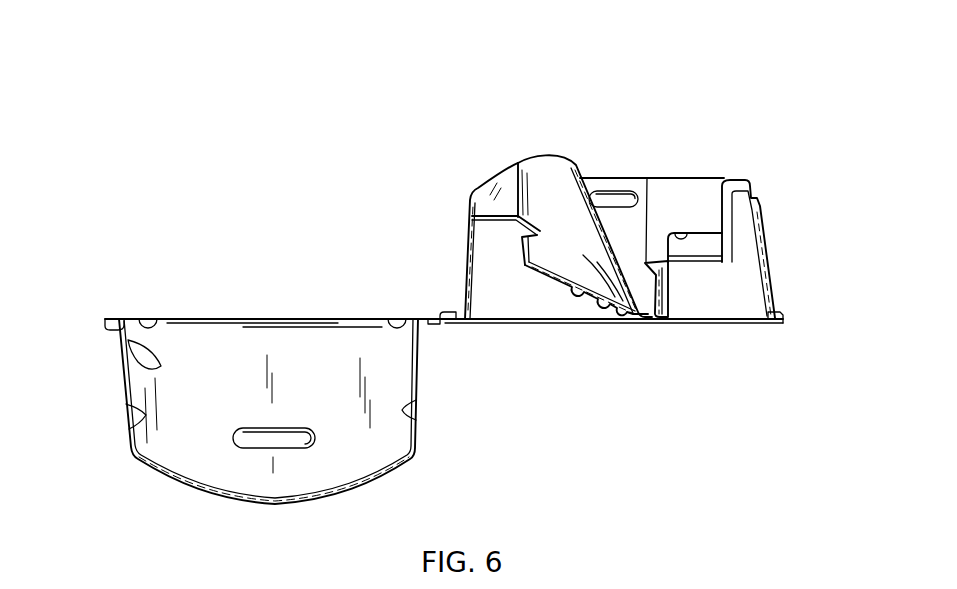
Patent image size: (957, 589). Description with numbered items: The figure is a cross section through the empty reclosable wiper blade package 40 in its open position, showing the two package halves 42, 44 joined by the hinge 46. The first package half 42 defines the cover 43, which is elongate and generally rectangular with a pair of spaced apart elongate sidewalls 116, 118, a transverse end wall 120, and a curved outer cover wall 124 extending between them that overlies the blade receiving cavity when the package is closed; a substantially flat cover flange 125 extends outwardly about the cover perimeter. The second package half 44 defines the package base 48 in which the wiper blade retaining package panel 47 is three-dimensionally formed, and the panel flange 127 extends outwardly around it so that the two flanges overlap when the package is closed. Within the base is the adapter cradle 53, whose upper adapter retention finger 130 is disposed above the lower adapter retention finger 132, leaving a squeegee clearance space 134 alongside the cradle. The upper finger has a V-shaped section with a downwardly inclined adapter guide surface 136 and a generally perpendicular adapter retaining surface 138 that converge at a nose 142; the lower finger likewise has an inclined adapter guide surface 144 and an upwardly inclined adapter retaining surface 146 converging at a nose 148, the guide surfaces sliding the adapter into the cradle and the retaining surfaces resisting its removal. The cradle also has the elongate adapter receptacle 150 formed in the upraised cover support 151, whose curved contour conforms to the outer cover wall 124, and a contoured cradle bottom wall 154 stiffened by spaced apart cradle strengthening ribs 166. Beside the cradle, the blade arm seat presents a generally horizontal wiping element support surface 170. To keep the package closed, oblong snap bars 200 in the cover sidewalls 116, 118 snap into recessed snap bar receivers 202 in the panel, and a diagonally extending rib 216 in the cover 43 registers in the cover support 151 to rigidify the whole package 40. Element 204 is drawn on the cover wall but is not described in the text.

The reclosable wiper blade package 40 is at (204, 121).
The package half 42 is at (129, 253).
The cover 43 is at (166, 500).
The package half 44 is at (804, 159).
The hinge 46 is at (446, 333).
The wiper blade retaining package panel 47 is at (668, 85).
The package base 48 is at (765, 353).
The adapter cradle 53 is at (740, 144).
The cover sidewall 116 is at (124, 410).
The cover sidewall 118 is at (421, 440).
The cover end wall 120 is at (275, 347).
The outer cover wall 124 is at (262, 506).
The cover flange 125 is at (112, 332).
The blade retaining package panel flange 127 is at (771, 310).
The upper adapter retention finger 130 is at (557, 162).
The lower adapter retention finger 132 is at (660, 178).
The squeegee clearance space 134 is at (699, 209).
The inclined adapter guide surface 136 is at (544, 198).
The adapter retaining surface 138 is at (527, 240).
The nose 142 is at (545, 238).
The inclined adapter guide surface 144 is at (652, 218).
The inclined adapter retaining surface 146 is at (660, 275).
The nose 148 is at (648, 280).
The adapter receptacle 150 is at (626, 85).
The cover support 151 is at (526, 161).
The cradle bottom wall 154 is at (605, 306).
The cradle strengthening ribs 166 is at (600, 282).
The wiping element support surface 170 is at (724, 180).
The snap bar 200 is at (296, 436).
The recessed snap bar receiver 202 is at (612, 191).
The boss 204 is at (160, 366).
The diagonally extending rib 216 is at (182, 465).